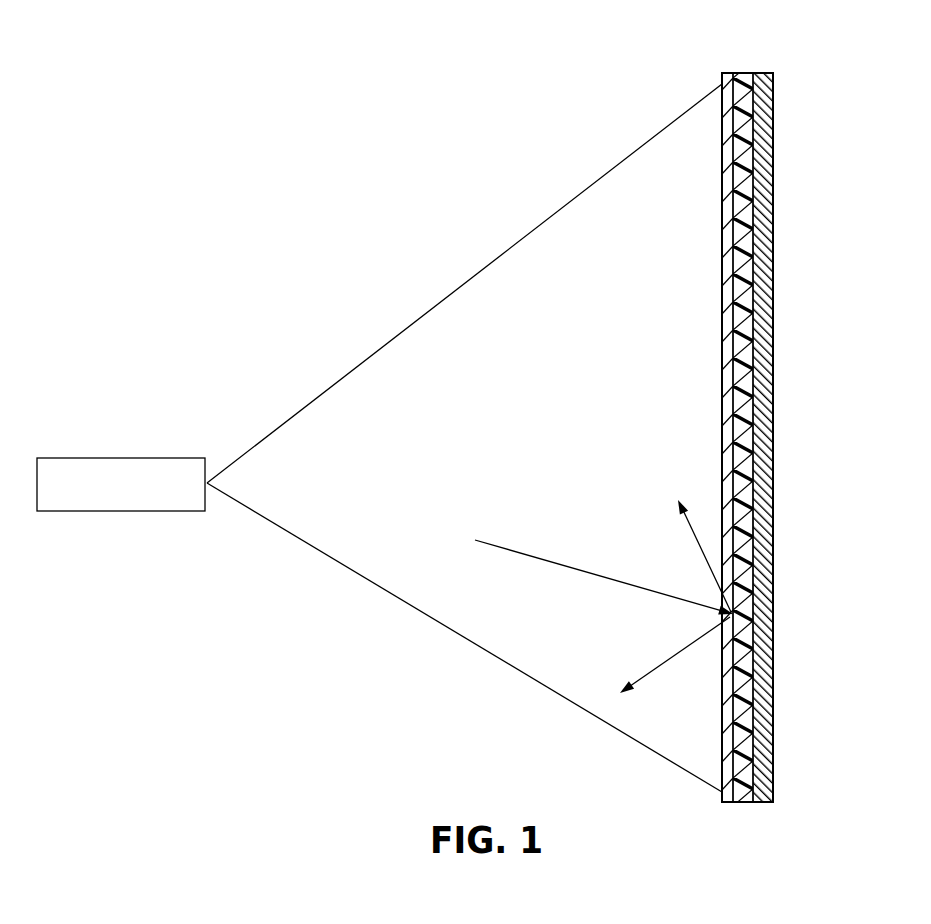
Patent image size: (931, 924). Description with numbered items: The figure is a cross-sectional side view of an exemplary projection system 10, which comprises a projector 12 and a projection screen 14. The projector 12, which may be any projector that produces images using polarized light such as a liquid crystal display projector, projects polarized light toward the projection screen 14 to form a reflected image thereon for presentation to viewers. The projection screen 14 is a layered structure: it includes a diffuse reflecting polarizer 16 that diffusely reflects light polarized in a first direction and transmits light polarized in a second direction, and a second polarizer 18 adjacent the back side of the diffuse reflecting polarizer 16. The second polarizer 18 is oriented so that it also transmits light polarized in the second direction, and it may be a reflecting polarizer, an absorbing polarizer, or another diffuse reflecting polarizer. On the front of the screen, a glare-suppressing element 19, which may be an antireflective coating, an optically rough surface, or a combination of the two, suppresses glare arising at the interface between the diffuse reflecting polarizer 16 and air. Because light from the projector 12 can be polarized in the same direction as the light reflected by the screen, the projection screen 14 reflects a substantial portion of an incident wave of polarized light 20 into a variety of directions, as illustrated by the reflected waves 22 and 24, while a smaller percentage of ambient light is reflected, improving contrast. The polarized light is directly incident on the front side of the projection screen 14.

The projection system 10 is at (394, 96).
The projector 12 is at (105, 457).
The projection screen 14 is at (773, 70).
The diffuse reflecting polarizer 16 is at (745, 803).
The second polarizer 18 is at (768, 214).
The glare-suppressing element 19 is at (729, 267).
The incident wave of polarized light 20 is at (558, 565).
The reflected wave 22 is at (704, 554).
The reflected wave 24 is at (668, 662).